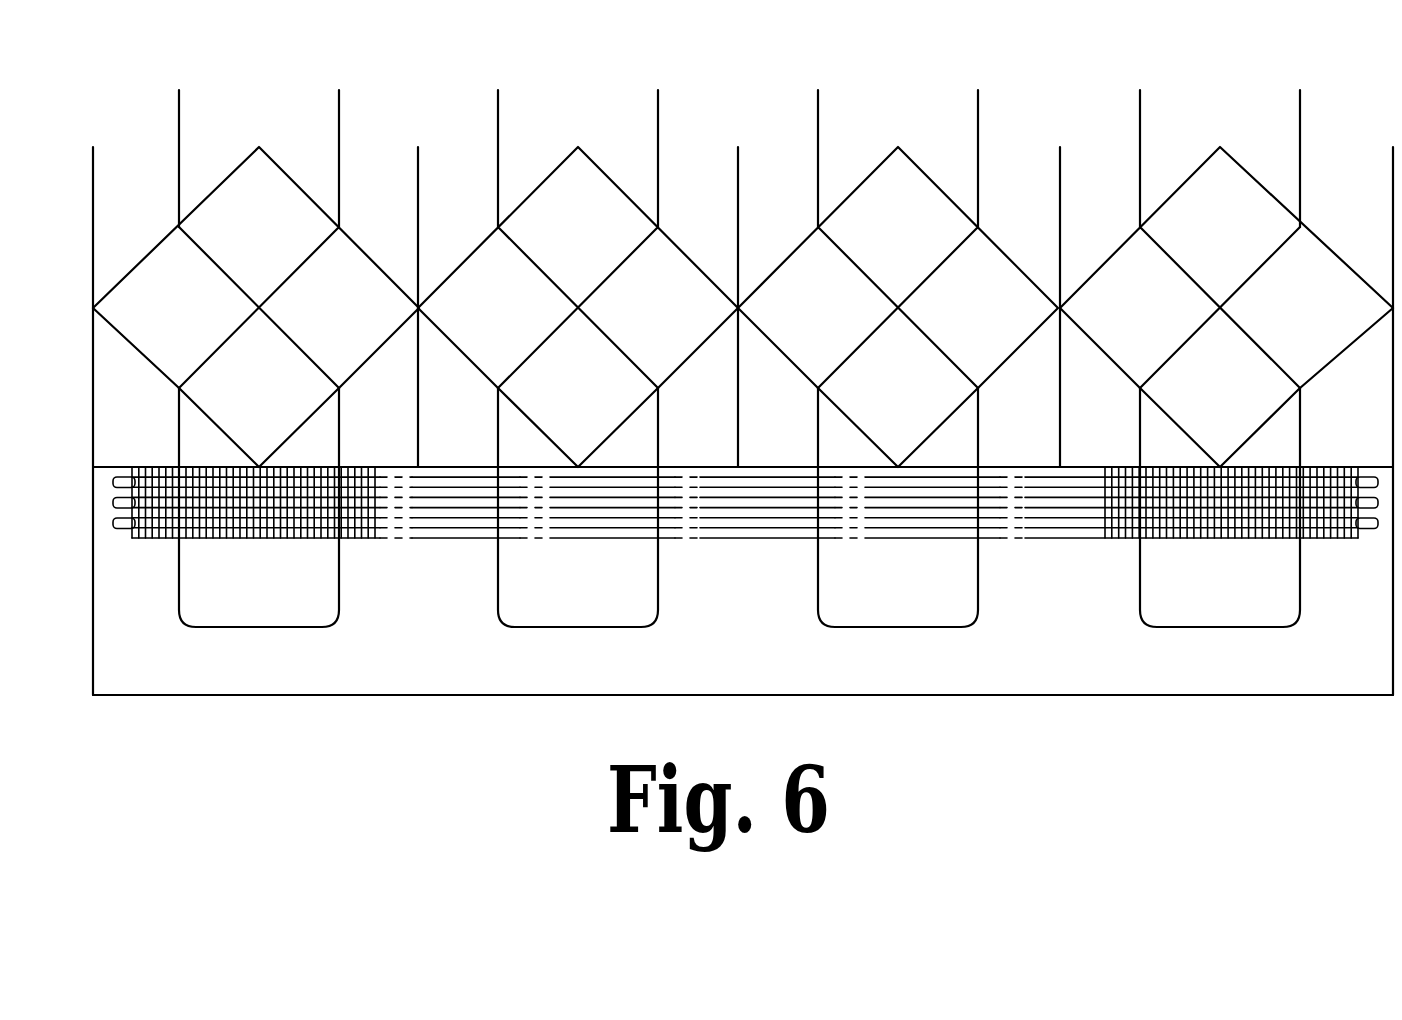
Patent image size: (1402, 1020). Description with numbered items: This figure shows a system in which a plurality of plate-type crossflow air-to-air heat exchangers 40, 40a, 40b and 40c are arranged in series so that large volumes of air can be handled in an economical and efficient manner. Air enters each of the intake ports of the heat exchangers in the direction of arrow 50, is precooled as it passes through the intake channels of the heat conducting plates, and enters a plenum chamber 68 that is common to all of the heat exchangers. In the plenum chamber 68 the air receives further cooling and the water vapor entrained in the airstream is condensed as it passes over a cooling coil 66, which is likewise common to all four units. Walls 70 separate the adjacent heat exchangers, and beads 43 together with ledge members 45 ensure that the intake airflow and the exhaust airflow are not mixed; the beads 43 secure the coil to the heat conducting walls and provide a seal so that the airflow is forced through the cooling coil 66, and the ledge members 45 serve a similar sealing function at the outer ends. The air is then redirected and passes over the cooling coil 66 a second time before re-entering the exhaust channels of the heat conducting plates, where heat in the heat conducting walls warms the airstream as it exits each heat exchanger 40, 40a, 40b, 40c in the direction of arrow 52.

The heat exchanger 40 is at (141, 234).
The heat exchanger 40a is at (469, 228).
The heat exchanger 40b is at (788, 231).
The heat exchanger 40c is at (1110, 226).
The bead 43 is at (262, 467).
The ledge member 45 is at (105, 465).
The arrow (intake airflow direction) 50 is at (180, 95).
The arrow (exhaust airflow direction) 52 is at (340, 102).
The cooling coil 66 is at (430, 540).
The plenum chamber 68 is at (1114, 658).
The wall 70 is at (1080, 430).